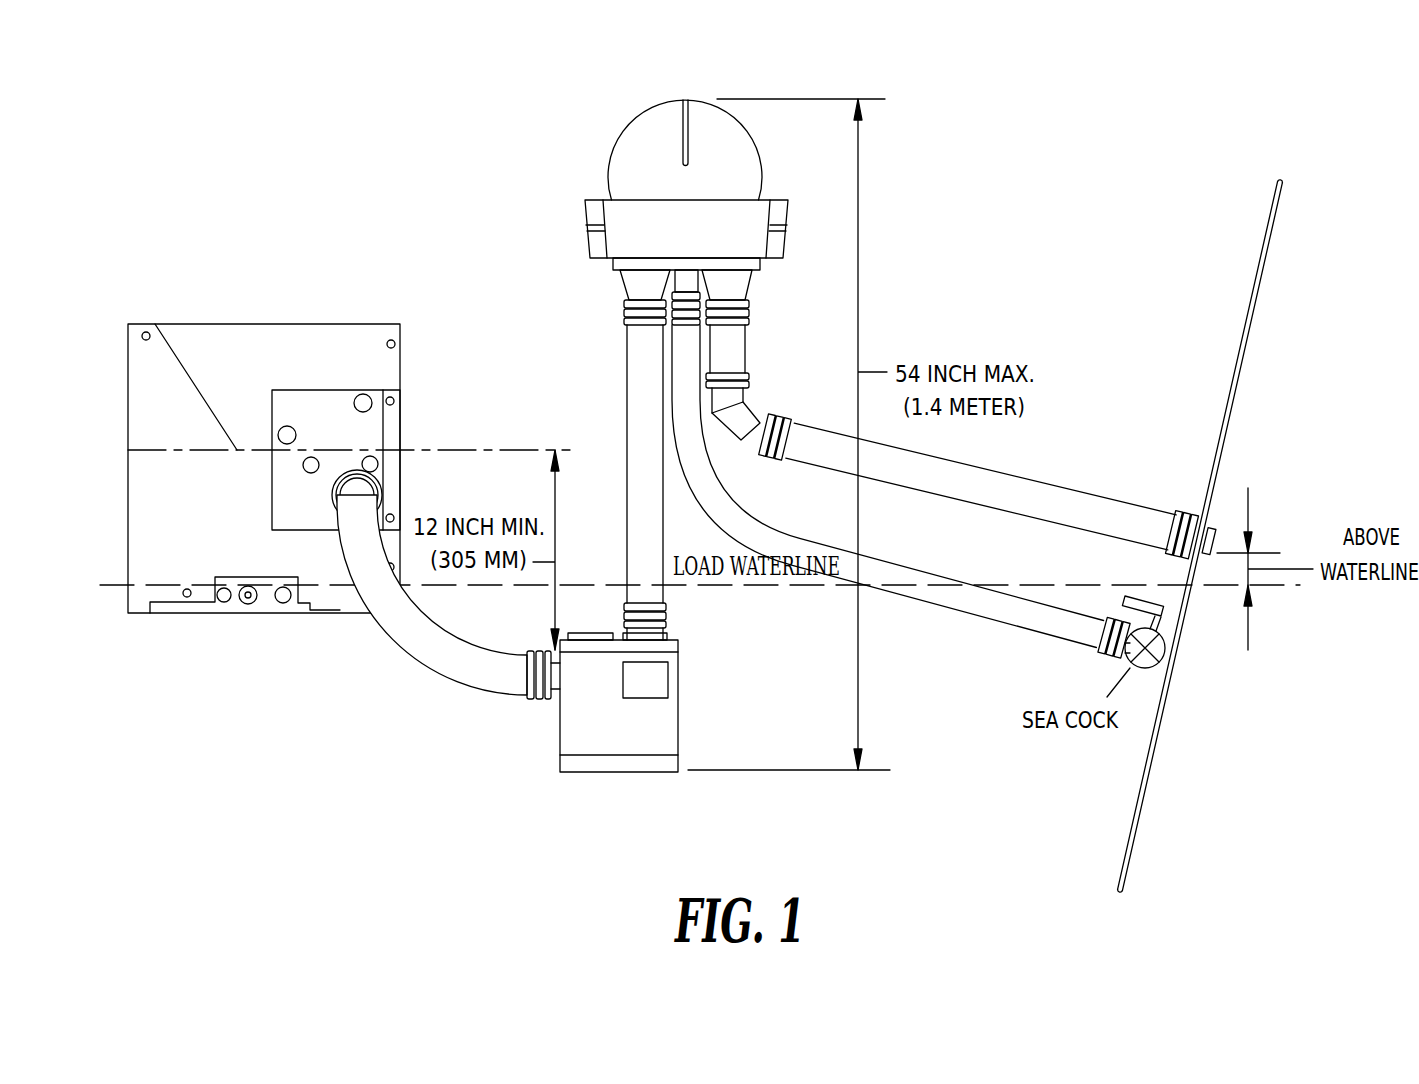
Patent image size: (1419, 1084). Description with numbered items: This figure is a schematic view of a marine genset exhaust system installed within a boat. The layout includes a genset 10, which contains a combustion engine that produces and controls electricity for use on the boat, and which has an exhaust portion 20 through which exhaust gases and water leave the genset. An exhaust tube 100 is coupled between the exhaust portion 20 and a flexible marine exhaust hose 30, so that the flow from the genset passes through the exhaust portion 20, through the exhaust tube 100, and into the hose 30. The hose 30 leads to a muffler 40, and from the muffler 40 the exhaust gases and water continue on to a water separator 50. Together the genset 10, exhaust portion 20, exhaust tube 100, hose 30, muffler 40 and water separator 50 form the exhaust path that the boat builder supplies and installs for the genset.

The genset 10 is at (263, 324).
The exhaust portion 20 is at (379, 477).
The exhaust tube 100 is at (376, 491).
The flexible marine exhaust hose 30 is at (427, 663).
The muffler 40 is at (682, 705).
The water separator 50 is at (756, 238).